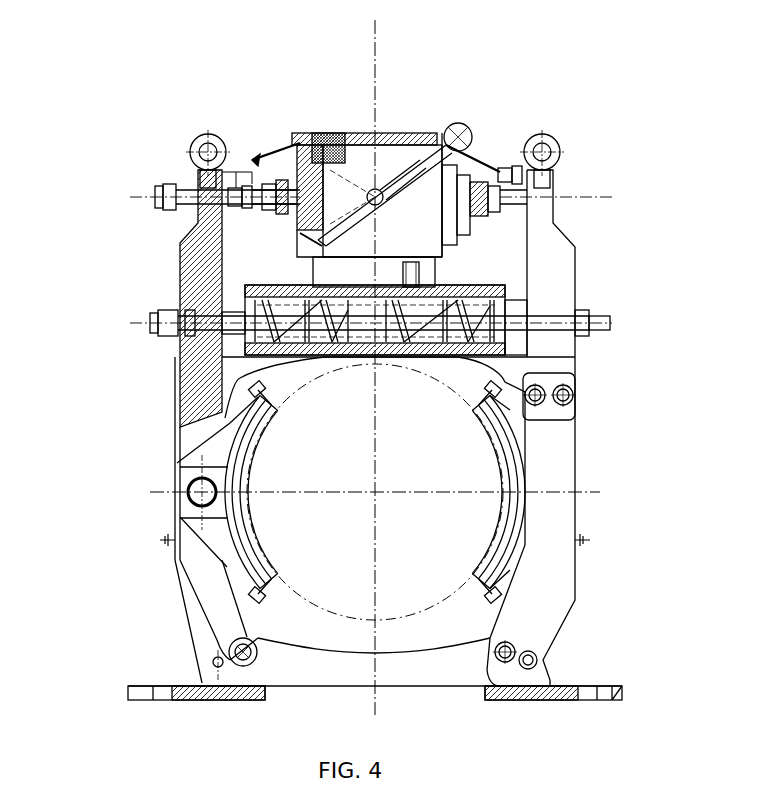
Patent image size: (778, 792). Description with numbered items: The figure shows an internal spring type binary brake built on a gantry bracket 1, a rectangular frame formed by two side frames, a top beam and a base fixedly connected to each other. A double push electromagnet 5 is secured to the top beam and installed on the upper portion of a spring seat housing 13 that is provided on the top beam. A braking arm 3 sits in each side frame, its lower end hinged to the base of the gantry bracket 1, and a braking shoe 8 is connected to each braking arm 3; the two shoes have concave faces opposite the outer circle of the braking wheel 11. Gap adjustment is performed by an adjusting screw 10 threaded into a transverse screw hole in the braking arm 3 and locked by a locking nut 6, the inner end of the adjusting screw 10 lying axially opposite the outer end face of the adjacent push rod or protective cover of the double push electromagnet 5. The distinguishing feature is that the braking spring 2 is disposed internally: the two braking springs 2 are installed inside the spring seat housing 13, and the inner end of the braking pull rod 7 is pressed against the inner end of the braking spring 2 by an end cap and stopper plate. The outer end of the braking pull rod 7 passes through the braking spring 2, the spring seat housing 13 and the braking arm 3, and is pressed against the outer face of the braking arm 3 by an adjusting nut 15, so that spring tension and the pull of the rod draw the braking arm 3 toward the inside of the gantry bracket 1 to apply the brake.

The gantry bracket 1 is at (558, 470).
The braking spring 2 is at (492, 303).
The braking arm 3 is at (183, 400).
The double push electromagnet 5 is at (418, 135).
The locking nut 6 is at (177, 187).
The braking pull rod 7 is at (190, 335).
The braking shoe 8 is at (217, 457).
The adjusting screw 10 is at (195, 191).
The braking wheel 11 is at (455, 445).
The spring seat housing 13 is at (247, 288).
The adjusting nut 15 is at (150, 313).